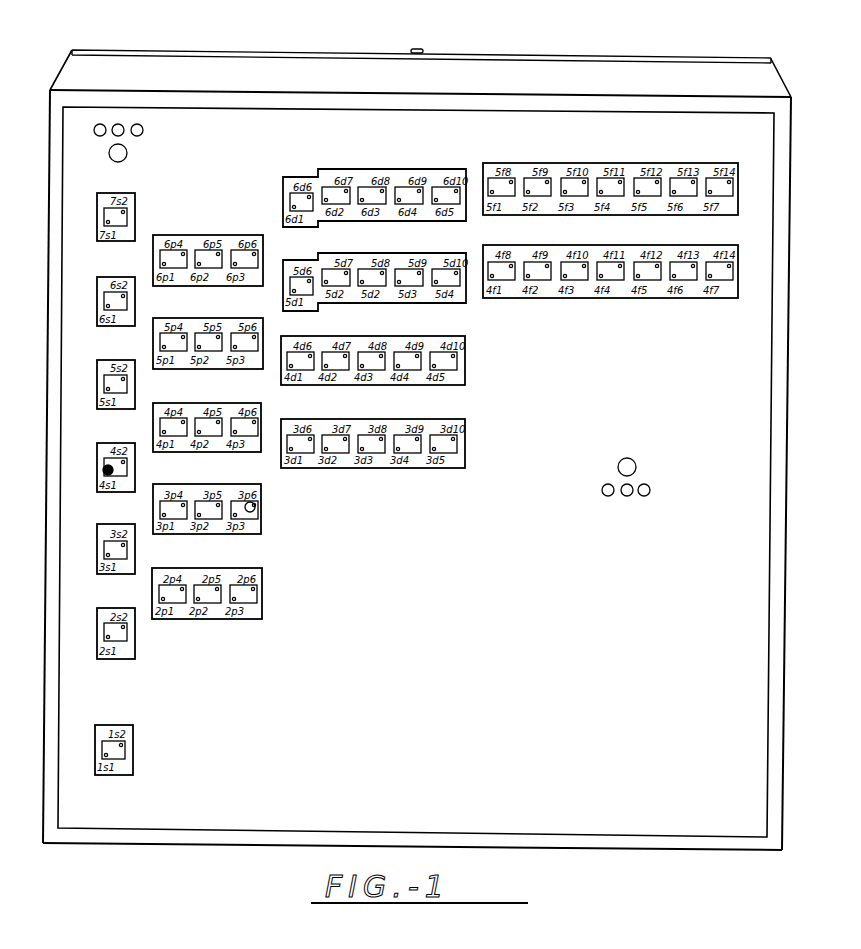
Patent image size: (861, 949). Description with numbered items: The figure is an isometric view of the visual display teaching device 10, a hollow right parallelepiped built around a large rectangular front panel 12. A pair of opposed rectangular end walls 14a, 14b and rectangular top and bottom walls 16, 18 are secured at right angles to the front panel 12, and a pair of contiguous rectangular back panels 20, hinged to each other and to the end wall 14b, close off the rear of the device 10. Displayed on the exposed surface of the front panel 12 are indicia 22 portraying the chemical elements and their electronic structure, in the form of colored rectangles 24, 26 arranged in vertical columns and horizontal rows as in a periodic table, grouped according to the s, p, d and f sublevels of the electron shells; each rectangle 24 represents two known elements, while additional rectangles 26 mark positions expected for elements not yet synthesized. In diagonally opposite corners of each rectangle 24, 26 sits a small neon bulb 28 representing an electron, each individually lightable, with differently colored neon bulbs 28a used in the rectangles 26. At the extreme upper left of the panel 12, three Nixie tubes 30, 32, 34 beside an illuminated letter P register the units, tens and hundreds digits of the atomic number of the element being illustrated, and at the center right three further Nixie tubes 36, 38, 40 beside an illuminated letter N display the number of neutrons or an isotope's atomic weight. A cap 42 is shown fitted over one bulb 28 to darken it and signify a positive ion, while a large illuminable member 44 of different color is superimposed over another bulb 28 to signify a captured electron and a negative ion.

The visual display teaching device 10 is at (684, 77).
The front panel 12 is at (559, 610).
The end wall 14a is at (46, 838).
The end wall 14b is at (782, 818).
The top wall 16 is at (475, 80).
The bottom wall 18 is at (522, 850).
The back panels 20 is at (229, 51).
The indicia 22 is at (282, 186).
The rectangles 24 is at (613, 162).
The rectangles 26 is at (401, 171).
The neon bulb 28 is at (221, 253).
The neon bulbs 28a is at (348, 185).
The numerical indicating device 30 is at (141, 132).
The numerical indicating device 32 is at (121, 129).
The numerical indicating device 34 is at (99, 127).
The Nixie tube 36 is at (648, 494).
The Nixie tube 38 is at (627, 496).
The Nixie tube 40 is at (608, 496).
The cap 42 is at (104, 469).
The illuminable member 44 is at (256, 504).